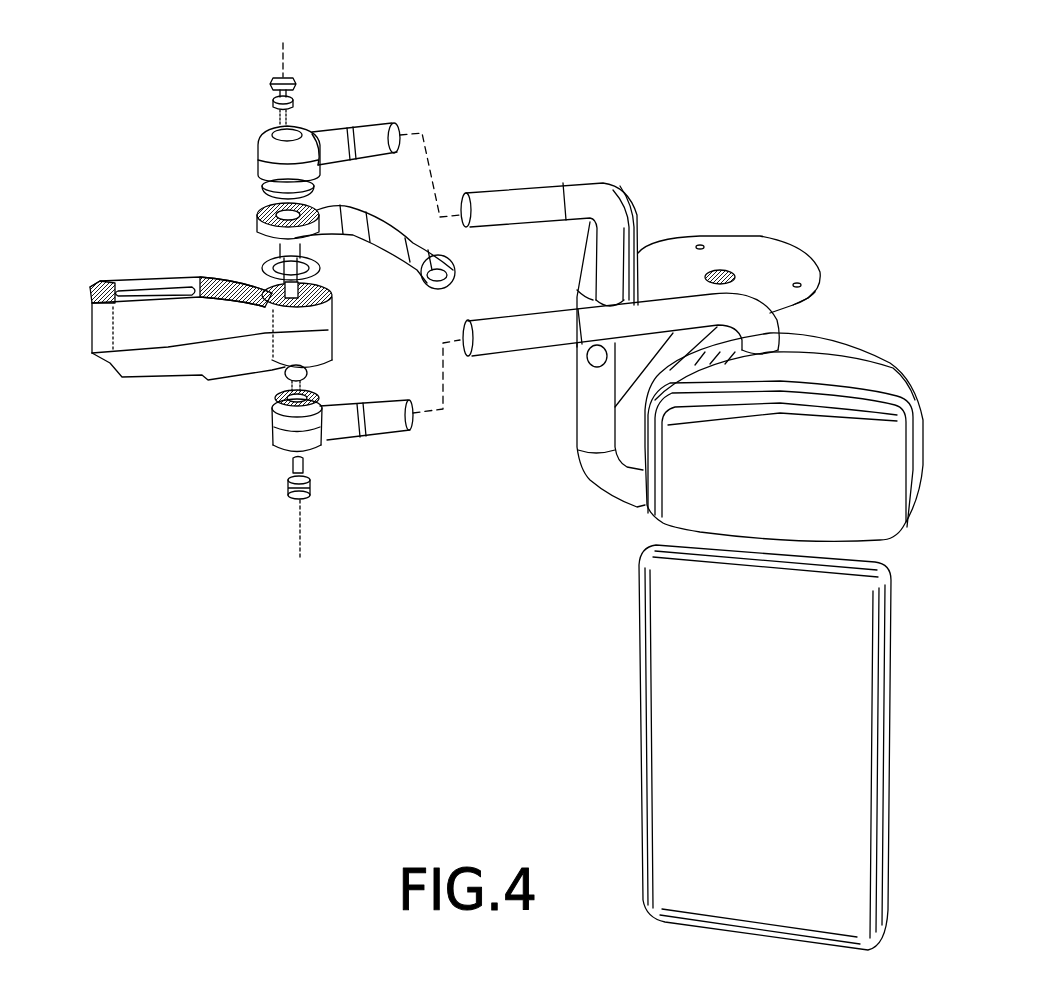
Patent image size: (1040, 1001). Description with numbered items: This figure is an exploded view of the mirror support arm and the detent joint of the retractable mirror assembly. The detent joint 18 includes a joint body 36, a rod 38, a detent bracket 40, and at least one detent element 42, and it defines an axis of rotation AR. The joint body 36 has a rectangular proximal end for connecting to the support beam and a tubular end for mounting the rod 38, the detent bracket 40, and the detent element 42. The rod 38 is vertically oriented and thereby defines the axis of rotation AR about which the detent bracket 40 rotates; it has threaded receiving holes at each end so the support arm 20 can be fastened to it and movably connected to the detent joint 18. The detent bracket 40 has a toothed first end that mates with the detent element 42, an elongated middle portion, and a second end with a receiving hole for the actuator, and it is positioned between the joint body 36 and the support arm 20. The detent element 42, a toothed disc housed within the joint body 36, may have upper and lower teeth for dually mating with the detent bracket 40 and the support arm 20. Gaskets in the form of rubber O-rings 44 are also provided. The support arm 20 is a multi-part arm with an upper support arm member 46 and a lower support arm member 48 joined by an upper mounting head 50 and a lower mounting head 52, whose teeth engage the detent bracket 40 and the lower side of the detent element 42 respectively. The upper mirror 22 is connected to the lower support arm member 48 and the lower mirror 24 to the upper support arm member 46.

The detent joint 18 is at (228, 396).
The support arm 20 is at (645, 163).
The upper mirror 22 is at (927, 453).
The lower mirror 24 is at (893, 683).
The joint body 36 is at (157, 368).
The rod 38 is at (308, 372).
The detent bracket 40 is at (357, 245).
The detent element 42 is at (255, 282).
The rubber O-rings 44 is at (262, 262).
The upper support arm member 46 is at (526, 200).
The lower support arm member 48 is at (520, 337).
The upper mounting head 50 is at (328, 137).
The lower mounting head 52 is at (343, 433).
The axis of rotation AR is at (300, 540).